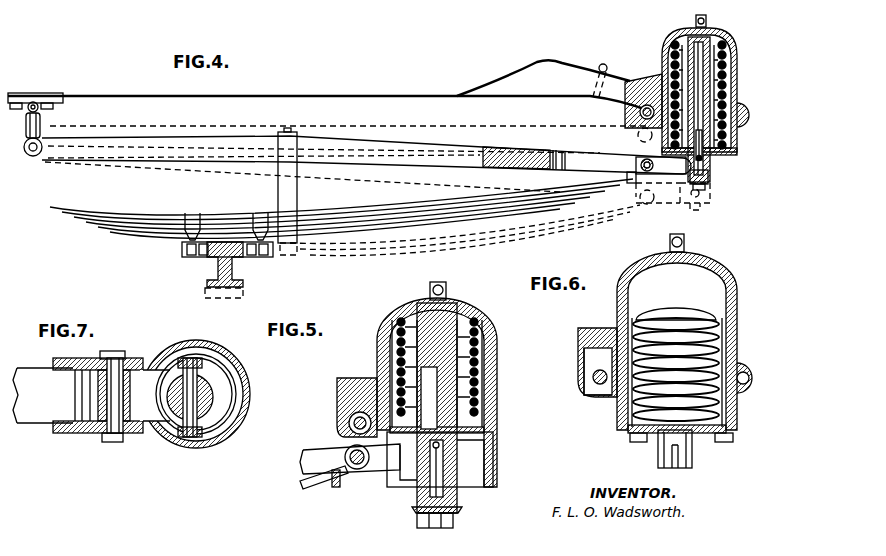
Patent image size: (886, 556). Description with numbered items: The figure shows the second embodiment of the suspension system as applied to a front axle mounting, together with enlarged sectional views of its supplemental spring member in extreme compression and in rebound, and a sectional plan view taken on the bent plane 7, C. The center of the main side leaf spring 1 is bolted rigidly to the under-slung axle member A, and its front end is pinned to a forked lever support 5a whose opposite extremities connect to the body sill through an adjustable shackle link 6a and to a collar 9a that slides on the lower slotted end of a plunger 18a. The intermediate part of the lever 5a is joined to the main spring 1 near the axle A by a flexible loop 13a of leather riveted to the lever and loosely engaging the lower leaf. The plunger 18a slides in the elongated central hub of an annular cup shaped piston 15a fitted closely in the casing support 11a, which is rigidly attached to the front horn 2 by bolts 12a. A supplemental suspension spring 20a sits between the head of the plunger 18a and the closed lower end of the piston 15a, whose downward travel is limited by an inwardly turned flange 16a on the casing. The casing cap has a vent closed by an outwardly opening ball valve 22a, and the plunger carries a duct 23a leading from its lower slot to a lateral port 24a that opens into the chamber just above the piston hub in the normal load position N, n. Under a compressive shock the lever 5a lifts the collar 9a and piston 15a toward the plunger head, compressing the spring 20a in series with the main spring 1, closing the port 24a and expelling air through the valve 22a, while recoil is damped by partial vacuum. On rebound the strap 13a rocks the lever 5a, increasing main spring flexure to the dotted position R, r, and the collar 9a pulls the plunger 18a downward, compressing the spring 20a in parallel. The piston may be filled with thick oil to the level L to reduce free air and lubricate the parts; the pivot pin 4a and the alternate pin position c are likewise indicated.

In FIG. 4, the main side leaf spring 1 is at (110, 227).
In FIG. 5, the main side leaf spring 1 is at (318, 482).
In FIG. 7, the main side leaf spring 1 is at (35, 412).
In FIG. 4, the front horn 2 is at (517, 79).
In FIG. 4, the pivot pin link 4a is at (650, 185).
In FIG. 7, the pivot pin link 4a is at (112, 443).
In FIG. 4, the forked lever support 5a is at (158, 142).
In FIG. 5, the forked lever support 5a is at (330, 450).
In FIG. 7, the forked lever support 5a is at (150, 356).
In FIG. 4, the adjustable shackle link 6a is at (44, 126).
In FIG. 5, the rod 7 is at (345, 458).
In FIG. 4, the collar 9a is at (710, 160).
In FIG. 5, the collar 9a is at (457, 461).
In FIG. 7, the collar 9a is at (210, 390).
In FIG. 4, the casing support 11a is at (736, 75).
In FIG. 5, the casing support 11a is at (497, 423).
In FIG. 6, the casing support 11a is at (737, 303).
In FIG. 7, the casing support 11a is at (248, 400).
In FIG. 4, the bolts 12a is at (604, 72).
In FIG. 5, the bolts 12a is at (356, 422).
In FIG. 6, the bolts 12a is at (596, 378).
In FIG. 4, the flexible loop 13a is at (280, 186).
In FIG. 4, the annular cup shaped piston 15a is at (731, 97).
In FIG. 5, the annular cup shaped piston 15a is at (497, 353).
In FIG. 6, the annular cup shaped piston 15a is at (723, 352).
In FIG. 5, the inwardly turned flange 16a is at (489, 487).
In FIG. 6, the inwardly turned flange 16a is at (731, 437).
In FIG. 7, the inwardly turned flange 16a is at (203, 437).
In FIG. 4, the plunger 18a is at (693, 60).
In FIG. 5, the plunger 18a is at (447, 377).
In FIG. 6, the plunger 18a is at (675, 308).
In FIG. 7, the plunger 18a is at (210, 410).
In FIG. 4, the supplemental suspension spring 20a is at (724, 62).
In FIG. 5, the supplemental suspension spring 20a is at (391, 314).
In FIG. 6, the supplemental suspension spring 20a is at (628, 421).
In FIG. 5, the ball valve 22a is at (446, 290).
In FIG. 6, the ball valve 22a is at (688, 242).
In FIG. 4, the duct 23a is at (728, 40).
In FIG. 5, the duct 23a is at (440, 403).
In FIG. 5, the lateral port 24a is at (387, 364).
In FIG. 4, the axle member A is at (213, 270).
In FIG. 4, the rebound position R is at (285, 248).
In FIG. 4, the normal load position N is at (142, 250).
In FIG. 5, the oil level L is at (497, 330).
In FIG. 6, the oil level L is at (737, 330).
In FIG. 5, the section plane C is at (460, 447).
In FIG. 4, the alternate pin position c is at (760, 128).
In FIG. 4, the normal load position n is at (713, 160).
In FIG. 4, the rebound position r is at (712, 193).